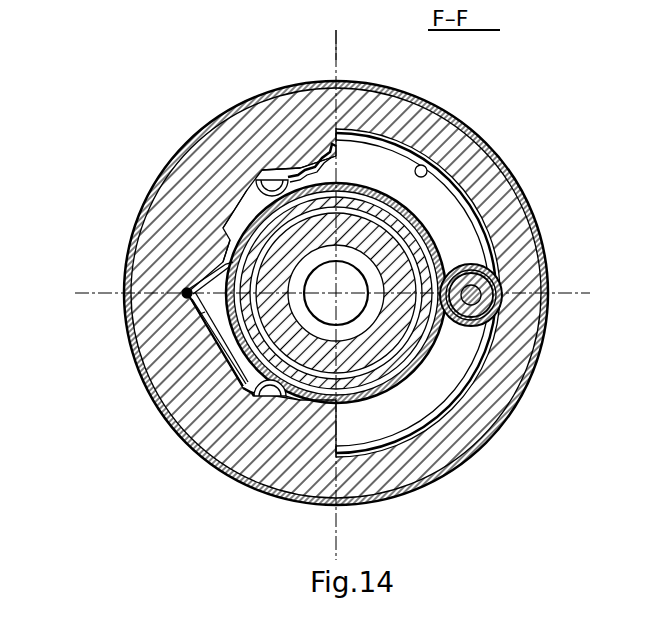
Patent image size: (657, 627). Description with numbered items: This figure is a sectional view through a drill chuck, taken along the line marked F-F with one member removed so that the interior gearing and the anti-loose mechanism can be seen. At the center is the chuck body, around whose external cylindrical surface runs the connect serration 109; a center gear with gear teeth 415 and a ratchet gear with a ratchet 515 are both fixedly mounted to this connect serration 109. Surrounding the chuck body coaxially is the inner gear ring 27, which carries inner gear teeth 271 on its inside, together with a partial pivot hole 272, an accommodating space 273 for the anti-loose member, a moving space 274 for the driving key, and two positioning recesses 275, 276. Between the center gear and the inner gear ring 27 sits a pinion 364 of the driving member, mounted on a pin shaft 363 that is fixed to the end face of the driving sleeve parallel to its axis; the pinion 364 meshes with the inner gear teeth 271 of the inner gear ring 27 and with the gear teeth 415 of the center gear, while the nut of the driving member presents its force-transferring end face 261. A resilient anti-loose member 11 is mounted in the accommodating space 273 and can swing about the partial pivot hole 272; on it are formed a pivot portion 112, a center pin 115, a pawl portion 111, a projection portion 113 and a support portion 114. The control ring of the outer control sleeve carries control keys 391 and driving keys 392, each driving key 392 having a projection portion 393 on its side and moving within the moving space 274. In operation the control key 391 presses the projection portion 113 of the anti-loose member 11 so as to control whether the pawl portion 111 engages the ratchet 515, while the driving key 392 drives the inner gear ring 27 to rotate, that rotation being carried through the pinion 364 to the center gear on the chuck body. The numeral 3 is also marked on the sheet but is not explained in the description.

The device 3 is at (656, 30).
The resilient anti-loose member 11 is at (156, 386).
The inner gear ring 27 is at (216, 172).
The connect serration 109 is at (345, 185).
The pawl portion 111 is at (232, 258).
The pivot portion 112 is at (180, 290).
The projection portion 113 is at (212, 412).
The support portion 114 is at (244, 401).
The center pin 115 is at (182, 305).
The force-transferring end face 261 is at (656, 118).
The inner gear teeth 271 is at (478, 140).
The partial pivot hole 272 is at (180, 299).
The accommodating space for anti-loose member 273 is at (238, 393).
The moving space for driving key 274 is at (233, 230).
The positioning recess 275 is at (246, 193).
The positioning recess 276 is at (316, 153).
The pin shaft 363 is at (500, 318).
The pinion 364 is at (512, 263).
The control key 391 is at (141, 365).
The driving key 392 is at (275, 168).
The projection portion 393 is at (315, 147).
The gear teeth 415 is at (430, 242).
The ratchet 515 is at (222, 247).